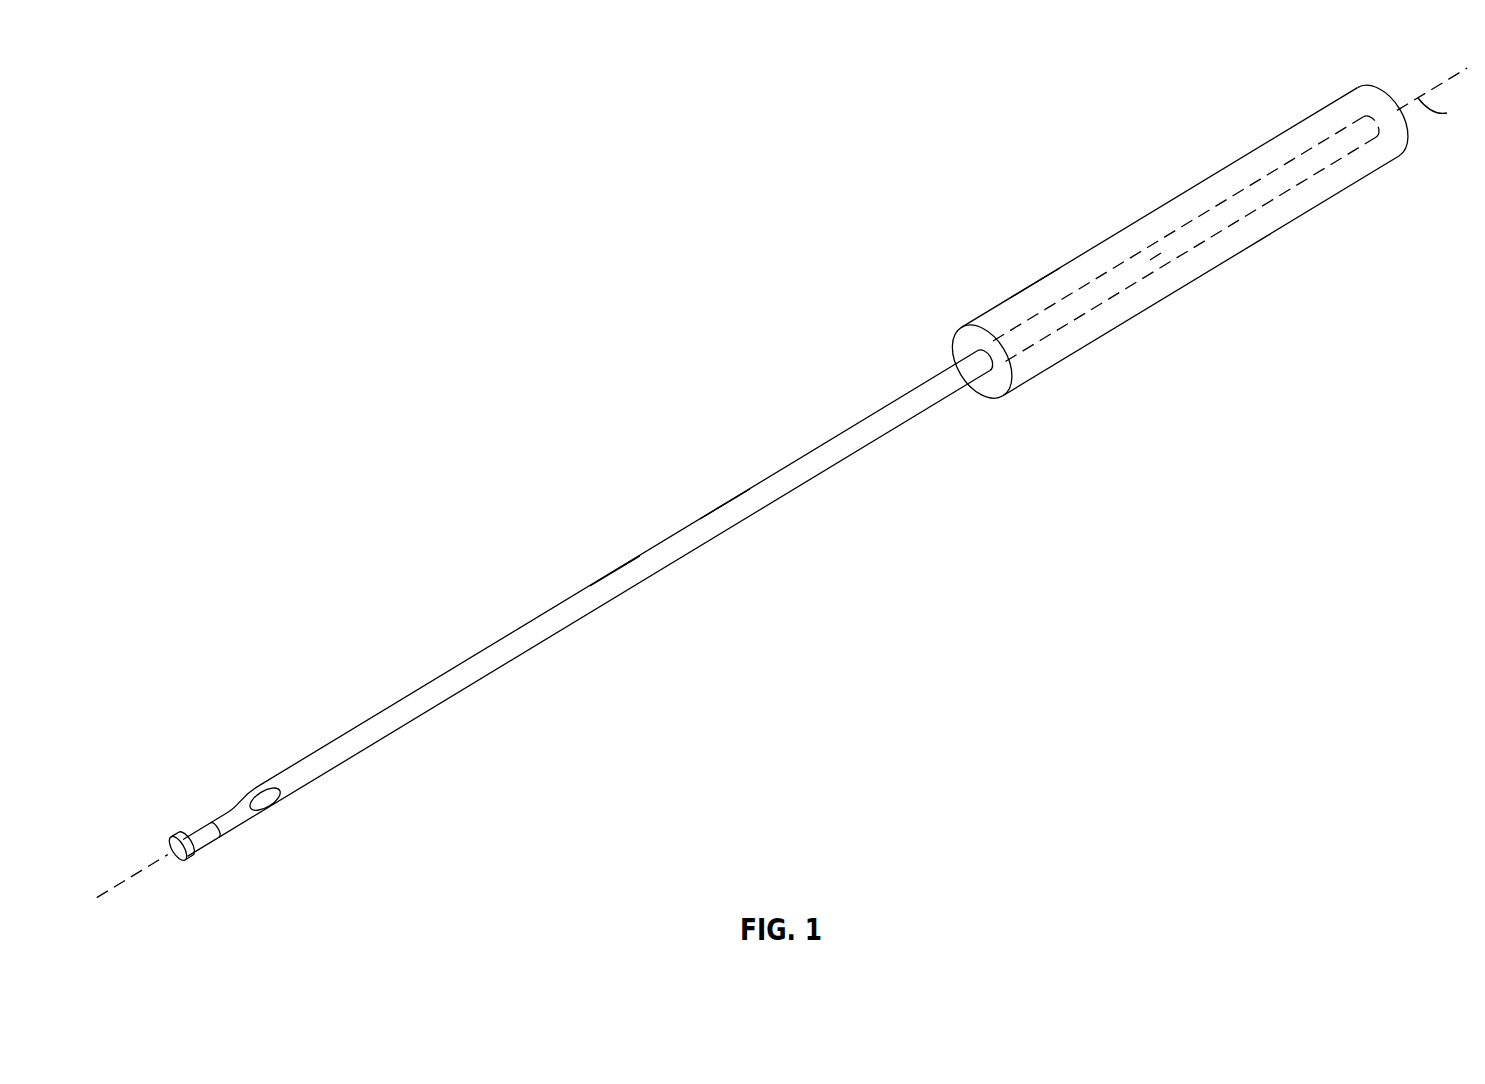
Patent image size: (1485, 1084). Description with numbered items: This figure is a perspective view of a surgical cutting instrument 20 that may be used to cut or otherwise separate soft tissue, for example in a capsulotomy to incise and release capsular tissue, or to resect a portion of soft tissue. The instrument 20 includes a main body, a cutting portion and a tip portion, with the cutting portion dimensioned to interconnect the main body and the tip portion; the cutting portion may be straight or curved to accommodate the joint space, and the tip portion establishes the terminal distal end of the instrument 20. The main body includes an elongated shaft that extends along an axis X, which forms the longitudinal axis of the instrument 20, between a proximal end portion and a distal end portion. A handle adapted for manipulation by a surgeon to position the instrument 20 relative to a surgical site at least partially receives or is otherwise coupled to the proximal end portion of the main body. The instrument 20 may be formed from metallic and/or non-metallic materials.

The surgical instrument 20 is at (375, 264).